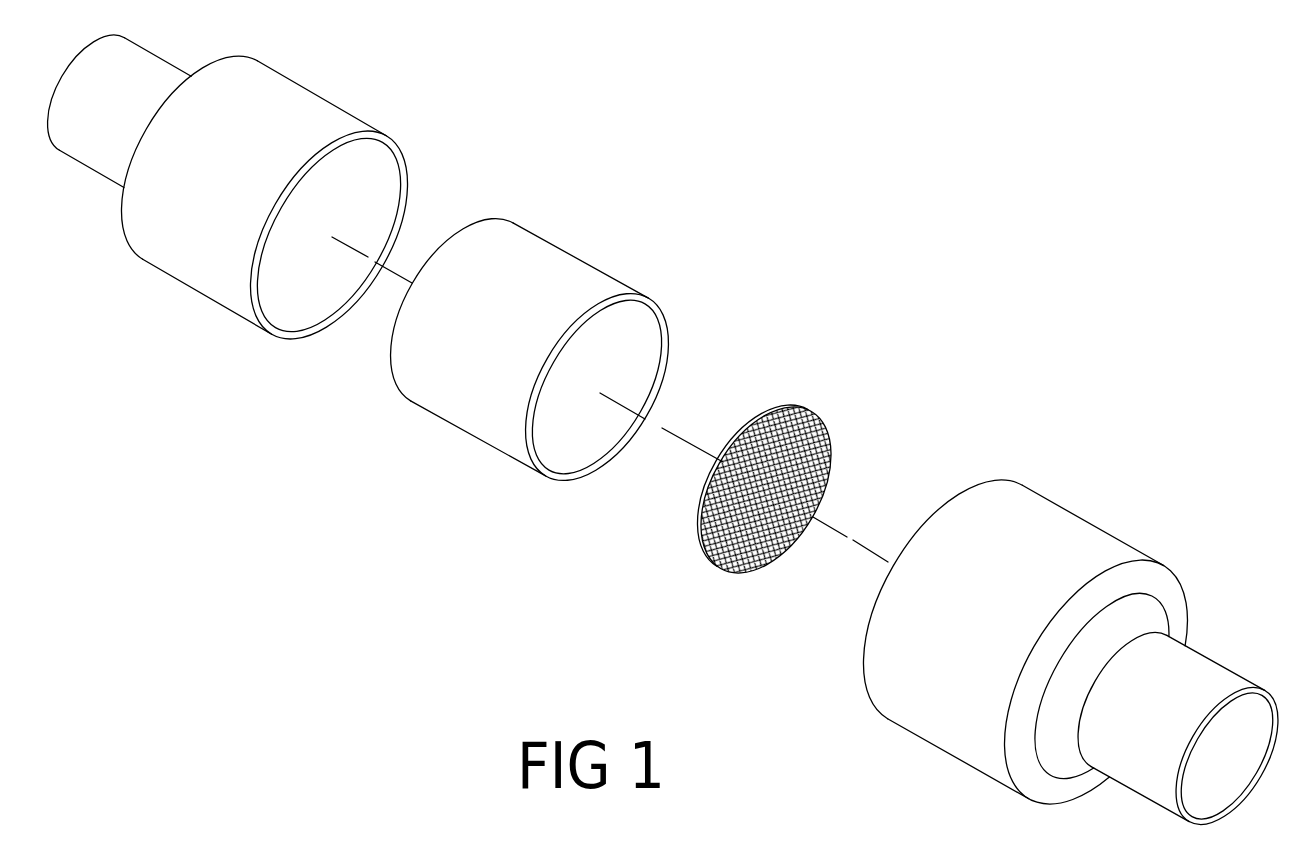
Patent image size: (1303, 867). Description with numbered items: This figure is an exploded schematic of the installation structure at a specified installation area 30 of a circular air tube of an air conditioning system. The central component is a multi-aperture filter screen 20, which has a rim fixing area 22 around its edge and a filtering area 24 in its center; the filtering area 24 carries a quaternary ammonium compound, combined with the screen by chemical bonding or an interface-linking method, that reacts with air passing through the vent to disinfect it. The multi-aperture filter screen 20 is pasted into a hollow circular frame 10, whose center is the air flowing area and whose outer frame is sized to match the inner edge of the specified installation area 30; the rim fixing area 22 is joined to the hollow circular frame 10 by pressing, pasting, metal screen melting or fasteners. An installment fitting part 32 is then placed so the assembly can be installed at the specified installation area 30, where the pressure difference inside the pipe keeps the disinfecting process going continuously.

The hollow circular frame 10 is at (572, 277).
The multi-aperture filter screen 20 is at (786, 469).
The rim fixing area 22 is at (757, 573).
The filtering area 24 is at (827, 443).
The specified installation area 30 is at (1194, 665).
The installment fitting part 32 is at (325, 112).